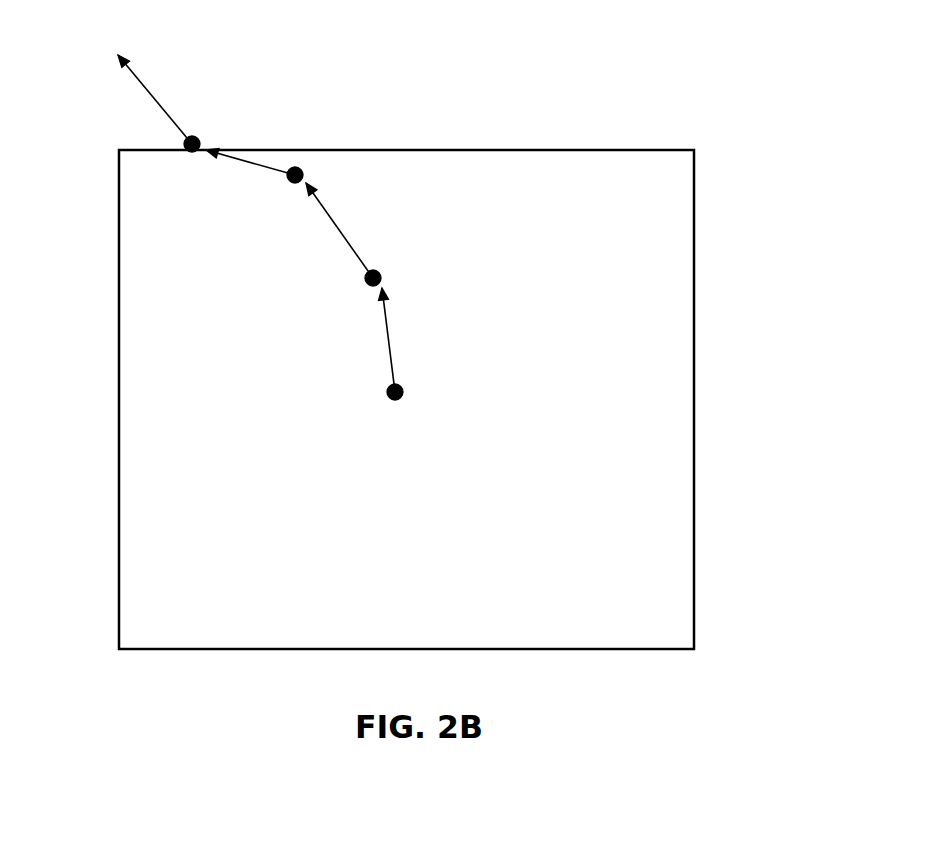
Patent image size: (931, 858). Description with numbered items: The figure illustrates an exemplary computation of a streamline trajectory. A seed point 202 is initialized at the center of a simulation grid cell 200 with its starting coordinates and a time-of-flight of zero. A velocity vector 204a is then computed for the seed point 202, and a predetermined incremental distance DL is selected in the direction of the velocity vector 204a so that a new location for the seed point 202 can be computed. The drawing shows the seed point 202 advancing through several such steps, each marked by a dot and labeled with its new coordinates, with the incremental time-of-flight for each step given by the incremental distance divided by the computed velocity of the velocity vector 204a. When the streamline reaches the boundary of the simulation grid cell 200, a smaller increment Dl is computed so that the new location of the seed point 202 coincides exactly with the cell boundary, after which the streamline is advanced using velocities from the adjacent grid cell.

The simulation grid cell 200 is at (695, 188).
The seed point 202 is at (388, 397).
The velocity vector 204a is at (380, 330).